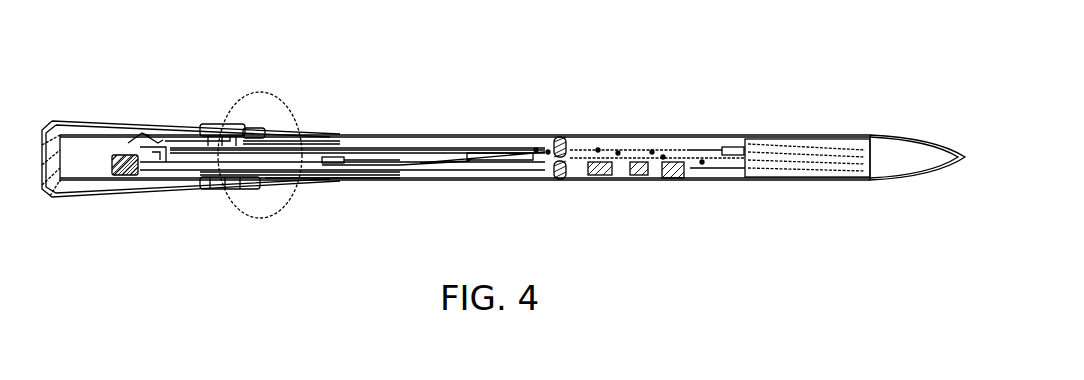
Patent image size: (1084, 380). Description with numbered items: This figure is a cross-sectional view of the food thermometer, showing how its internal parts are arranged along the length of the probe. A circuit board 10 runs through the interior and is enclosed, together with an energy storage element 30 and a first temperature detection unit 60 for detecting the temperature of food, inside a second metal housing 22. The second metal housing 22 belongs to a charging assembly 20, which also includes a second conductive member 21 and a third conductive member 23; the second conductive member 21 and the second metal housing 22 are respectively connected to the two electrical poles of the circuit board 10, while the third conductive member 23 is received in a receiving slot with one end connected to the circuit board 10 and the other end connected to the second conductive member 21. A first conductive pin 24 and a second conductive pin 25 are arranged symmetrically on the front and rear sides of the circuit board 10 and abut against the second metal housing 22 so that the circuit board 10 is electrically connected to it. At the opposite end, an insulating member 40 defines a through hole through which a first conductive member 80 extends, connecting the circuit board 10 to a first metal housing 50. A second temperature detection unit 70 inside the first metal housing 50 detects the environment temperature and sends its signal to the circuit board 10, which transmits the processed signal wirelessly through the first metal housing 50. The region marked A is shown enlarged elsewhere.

The circuit board 10 is at (529, 136).
The charging assembly 20 is at (358, 62).
The second conductive member 21 is at (270, 96).
The second metal housing 22 is at (300, 110).
The third conductive member 23 is at (366, 110).
The first conductive pin 24 is at (560, 136).
The second conductive pin 25 is at (560, 183).
The energy storage element 30 is at (781, 183).
The insulating member 40 is at (238, 196).
The first metal housing 50 is at (90, 112).
The first temperature detection unit 60 is at (673, 183).
The second temperature detection unit 70 is at (96, 190).
The first conductive member 80 is at (160, 112).
The detail region A is at (286, 206).